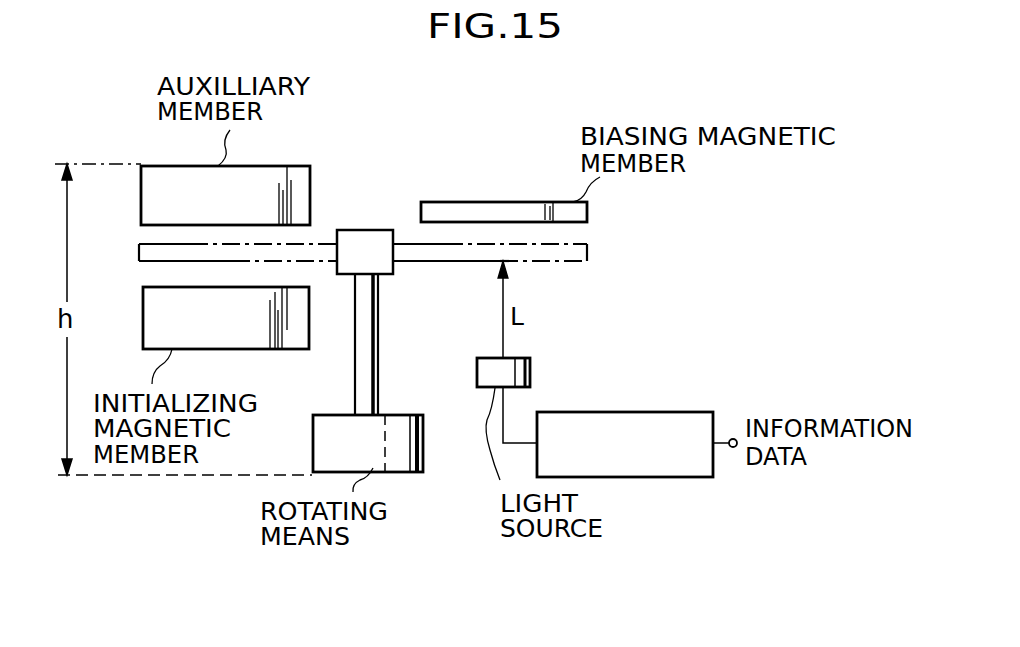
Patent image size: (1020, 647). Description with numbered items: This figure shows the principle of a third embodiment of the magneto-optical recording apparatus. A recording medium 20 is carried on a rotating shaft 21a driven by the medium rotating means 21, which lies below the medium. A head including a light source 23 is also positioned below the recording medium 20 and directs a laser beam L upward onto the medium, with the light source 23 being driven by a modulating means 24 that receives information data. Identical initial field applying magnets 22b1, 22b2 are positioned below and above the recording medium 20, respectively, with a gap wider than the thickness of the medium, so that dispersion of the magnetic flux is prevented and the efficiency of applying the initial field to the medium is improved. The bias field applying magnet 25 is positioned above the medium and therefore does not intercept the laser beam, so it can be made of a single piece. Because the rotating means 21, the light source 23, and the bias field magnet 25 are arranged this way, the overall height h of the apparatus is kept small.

The recording medium 20 is at (574, 262).
The medium rotating means 21 is at (423, 447).
The rotating shaft 21a is at (378, 342).
The initial field applying magnet 22b1 is at (187, 349).
The initial field applying magnet (auxiliary member) 22b2 is at (240, 164).
The light source 23 is at (530, 372).
The modulating means 24 is at (642, 412).
The bias field applying magnet 25 is at (587, 212).